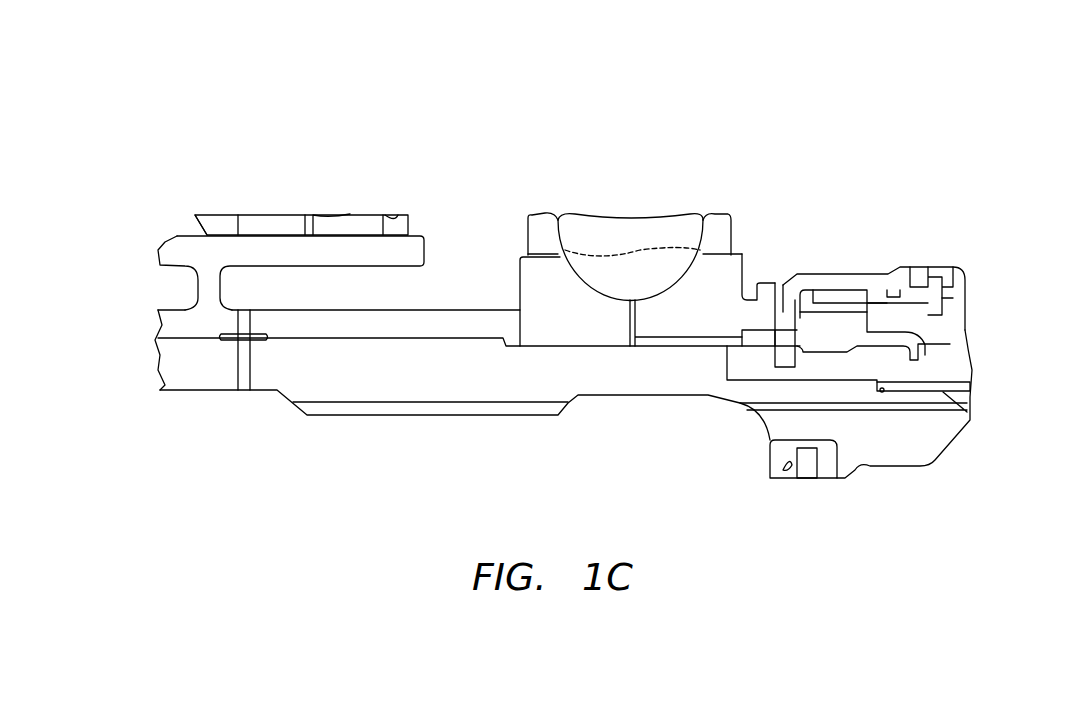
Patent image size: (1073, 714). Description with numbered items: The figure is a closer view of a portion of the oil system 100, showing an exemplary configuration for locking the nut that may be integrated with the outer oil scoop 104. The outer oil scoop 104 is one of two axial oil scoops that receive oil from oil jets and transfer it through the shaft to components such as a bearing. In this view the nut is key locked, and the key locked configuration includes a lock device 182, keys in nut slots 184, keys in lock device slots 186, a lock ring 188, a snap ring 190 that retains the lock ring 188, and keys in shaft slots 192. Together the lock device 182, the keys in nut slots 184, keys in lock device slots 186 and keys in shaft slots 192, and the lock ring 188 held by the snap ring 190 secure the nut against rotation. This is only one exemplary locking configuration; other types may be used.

The oil system 100 is at (902, 110).
The outer oil scoop 104 is at (927, 357).
The lock device 182 is at (822, 275).
The keys in nut slots 184 is at (842, 293).
The keys in lock device slots 186 is at (912, 267).
The lock ring 188 is at (885, 303).
The snap ring 190 is at (947, 298).
The keys in shaft slots 192 is at (782, 357).